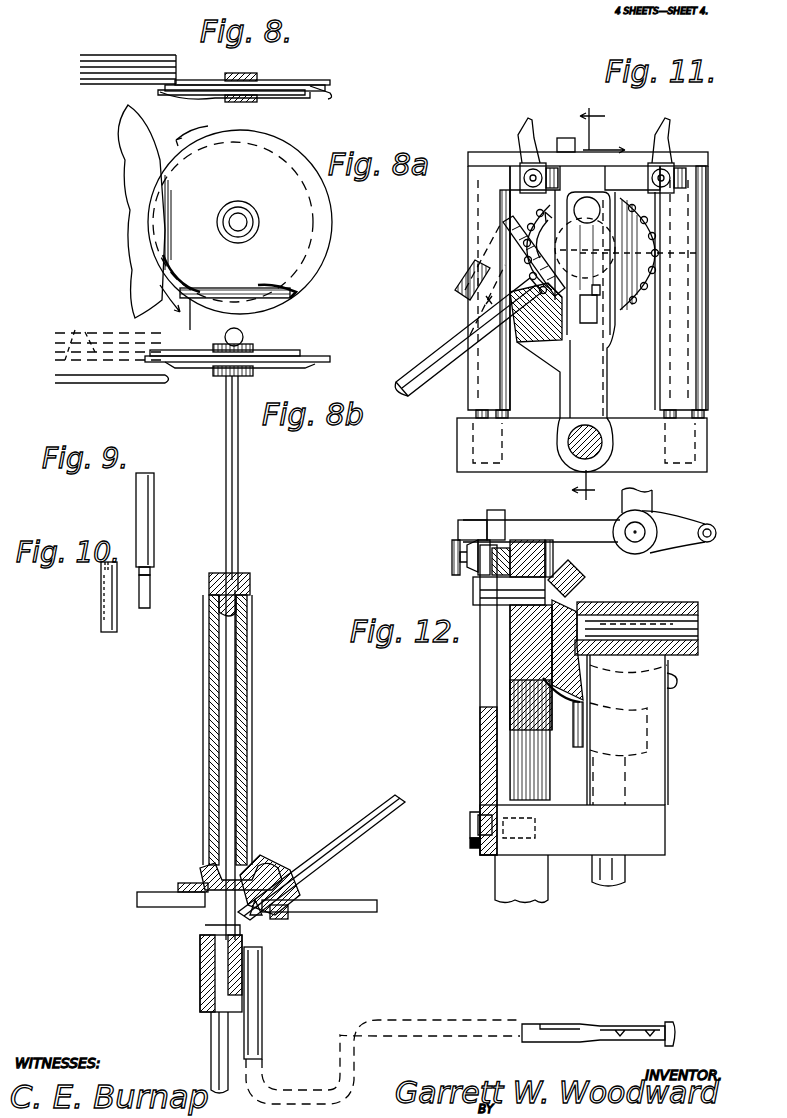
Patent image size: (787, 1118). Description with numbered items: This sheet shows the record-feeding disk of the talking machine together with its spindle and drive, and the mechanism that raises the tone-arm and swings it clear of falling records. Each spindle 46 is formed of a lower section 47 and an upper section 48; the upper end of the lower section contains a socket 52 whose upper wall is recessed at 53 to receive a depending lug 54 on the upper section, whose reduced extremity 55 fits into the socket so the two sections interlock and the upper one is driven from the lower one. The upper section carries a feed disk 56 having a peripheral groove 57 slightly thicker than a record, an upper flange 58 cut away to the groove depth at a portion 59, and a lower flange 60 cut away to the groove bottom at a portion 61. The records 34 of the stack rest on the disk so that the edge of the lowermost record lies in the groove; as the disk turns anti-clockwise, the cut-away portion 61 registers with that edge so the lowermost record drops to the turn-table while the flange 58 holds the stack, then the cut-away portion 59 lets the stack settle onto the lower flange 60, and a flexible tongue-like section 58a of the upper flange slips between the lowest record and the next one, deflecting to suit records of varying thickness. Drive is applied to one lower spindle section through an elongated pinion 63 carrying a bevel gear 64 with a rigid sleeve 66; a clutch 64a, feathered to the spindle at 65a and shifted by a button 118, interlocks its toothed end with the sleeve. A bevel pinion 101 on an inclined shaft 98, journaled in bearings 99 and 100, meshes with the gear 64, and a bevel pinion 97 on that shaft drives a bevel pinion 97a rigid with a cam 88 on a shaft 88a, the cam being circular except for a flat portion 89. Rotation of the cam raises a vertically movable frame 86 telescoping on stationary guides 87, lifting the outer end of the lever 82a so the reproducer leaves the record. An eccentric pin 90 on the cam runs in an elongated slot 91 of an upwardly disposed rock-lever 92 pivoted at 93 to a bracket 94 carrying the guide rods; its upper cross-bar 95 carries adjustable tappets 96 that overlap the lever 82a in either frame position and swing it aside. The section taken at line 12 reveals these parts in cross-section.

In FIG. 11, the section line 12 is at (591, 303).
In FIG. 12, the section line 12 is at (589, 497).
In FIG. 8, the strip material 34 is at (147, 58).
In FIG. 8A, the strip material 34 is at (128, 211).
In FIG. 8B, the strip material 34 is at (112, 340).
In FIG. 8A, the spindle 46 is at (246, 220).
In FIG. 8B, the lower spindle section 47 is at (250, 636).
In FIG. 10, the lower spindle section 47 is at (103, 622).
In FIG. 8B, the upper spindle section 48 is at (240, 530).
In FIG. 9, the upper spindle section 48 is at (156, 540).
In FIG. 10, the socket 52 is at (100, 590).
In FIG. 8A, the recess 53 is at (325, 329).
In FIG. 10, the recess 53 is at (112, 563).
In FIG. 9, the depending lug 54 is at (150, 570).
In FIG. 8B, the reduced extremity 55 is at (222, 602).
In FIG. 9, the reduced extremity 55 is at (149, 595).
In FIG. 8, the feed disk 56 is at (264, 66).
In FIG. 8A, the feed disk 56 is at (245, 299).
In FIG. 8, the groove 57 is at (280, 86).
In FIG. 8B, the groove 57 is at (325, 360).
In FIG. 8, the upper flange 58 is at (183, 88).
In FIG. 8A, the upper flange 58 is at (276, 146).
In FIG. 8B, the upper flange 58 is at (225, 342).
In FIG. 8A, the flexible section 58a is at (191, 313).
In FIG. 8, the cut-away portion 59 is at (258, 80).
In FIG. 8A, the cut-away portion 59 is at (255, 294).
In FIG. 8, the lower flange 60 is at (205, 96).
In FIG. 8B, the lower flange 60 is at (272, 370).
In FIG. 8, the cut-away portion 61 is at (322, 92).
In FIG. 8A, the cut-away portion 61 is at (310, 236).
In FIG. 8B, the pinion 63 is at (250, 730).
In FIG. 8B, the bevel gear 64 is at (250, 863).
In FIG. 8B, the clutch 64a is at (212, 968).
In FIG. 8B, the feather 65a is at (208, 1002).
In FIG. 8B, the sleeve 66 is at (210, 915).
In FIG. 11, the lever 82a is at (540, 160).
In FIG. 12, the lever 82a is at (566, 530).
In FIG. 11, the vertically movable frame 86 is at (624, 201).
In FIG. 12, the vertically movable frame 86 is at (520, 780).
In FIG. 11, the stationary guides 87 is at (468, 413).
In FIG. 11, the cam 88 is at (640, 225).
In FIG. 12, the cam 88 is at (520, 630).
In FIG. 11, the cam shaft 88a is at (708, 255).
In FIG. 12, the cam shaft 88a is at (600, 620).
In FIG. 11, the flat portion 89 is at (533, 499).
In FIG. 12, the flat portion 89 is at (528, 540).
In FIG. 11, the eccentric pin 90 is at (603, 210).
In FIG. 12, the eccentric pin 90 is at (474, 596).
In FIG. 11, the elongated slot 91 is at (600, 325).
In FIG. 11, the rock-lever 92 is at (580, 370).
In FIG. 12, the rock-lever 92 is at (482, 782).
In FIG. 11, the pivot 93 is at (603, 442).
In FIG. 12, the pivot 93 is at (472, 833).
In FIG. 11, the bracket 94 is at (520, 455).
In FIG. 12, the bracket 94 is at (652, 850).
In FIG. 11, the cross-bar 95 is at (573, 138).
In FIG. 11, the tappets 96 is at (526, 125).
In FIG. 12, the tappets 96 is at (465, 532).
In FIG. 11, the bevel pinion 97 is at (455, 365).
In FIG. 12, the bevel pinion 97 is at (530, 692).
In FIG. 11, the bevel pinion 97a is at (642, 300).
In FIG. 12, the bevel pinion 97a is at (585, 592).
In FIG. 8B, the inclined shaft 98 is at (362, 825).
In FIG. 11, the inclined shaft 98 is at (405, 394).
In FIG. 12, the inclined shaft 98 is at (610, 872).
In FIG. 11, the bearing 99 is at (462, 282).
In FIG. 8B, the bearing 100 is at (262, 910).
In FIG. 8B, the bevel pinion 101 is at (290, 918).
In FIG. 8B, the button 118 is at (670, 1024).